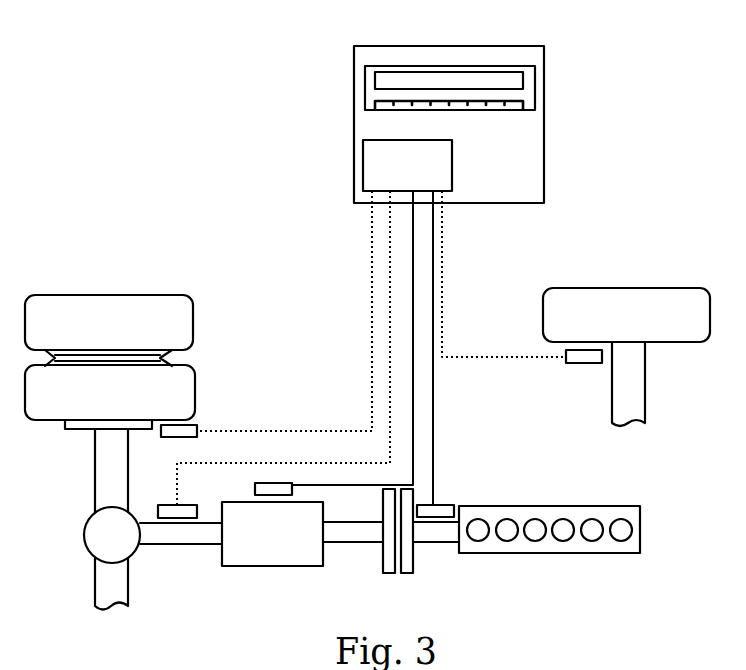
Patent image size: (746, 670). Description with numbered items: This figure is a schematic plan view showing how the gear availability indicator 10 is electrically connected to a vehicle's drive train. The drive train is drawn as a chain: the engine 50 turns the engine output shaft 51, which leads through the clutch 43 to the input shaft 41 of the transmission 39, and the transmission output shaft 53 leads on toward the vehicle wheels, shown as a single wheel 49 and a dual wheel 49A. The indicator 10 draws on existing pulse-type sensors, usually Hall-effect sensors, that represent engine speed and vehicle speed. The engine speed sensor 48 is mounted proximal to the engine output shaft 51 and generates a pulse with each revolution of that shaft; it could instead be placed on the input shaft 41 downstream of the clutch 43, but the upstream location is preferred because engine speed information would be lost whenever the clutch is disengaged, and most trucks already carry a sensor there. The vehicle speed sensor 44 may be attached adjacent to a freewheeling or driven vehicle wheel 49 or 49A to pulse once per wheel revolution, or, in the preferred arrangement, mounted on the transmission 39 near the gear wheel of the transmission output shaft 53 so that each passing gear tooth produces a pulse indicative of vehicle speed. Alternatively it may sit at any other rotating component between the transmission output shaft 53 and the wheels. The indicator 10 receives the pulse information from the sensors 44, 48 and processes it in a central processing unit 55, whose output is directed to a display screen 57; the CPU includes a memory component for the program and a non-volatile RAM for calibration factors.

The gear availability indicator 10 is at (626, 76).
The transmission 39 is at (300, 567).
The input shaft 41 is at (335, 545).
The clutch 43 is at (390, 574).
The vehicle speed sensor 44 is at (591, 366).
The engine speed sensor 48 is at (448, 505).
The vehicle wheel 49 is at (688, 286).
The vehicle wheel 49A is at (197, 370).
The engine 50 is at (585, 506).
The engine output shaft 51 is at (435, 543).
The transmission output shaft 53 is at (203, 548).
The central processing unit 55 is at (452, 175).
The display screen 57 is at (523, 110).